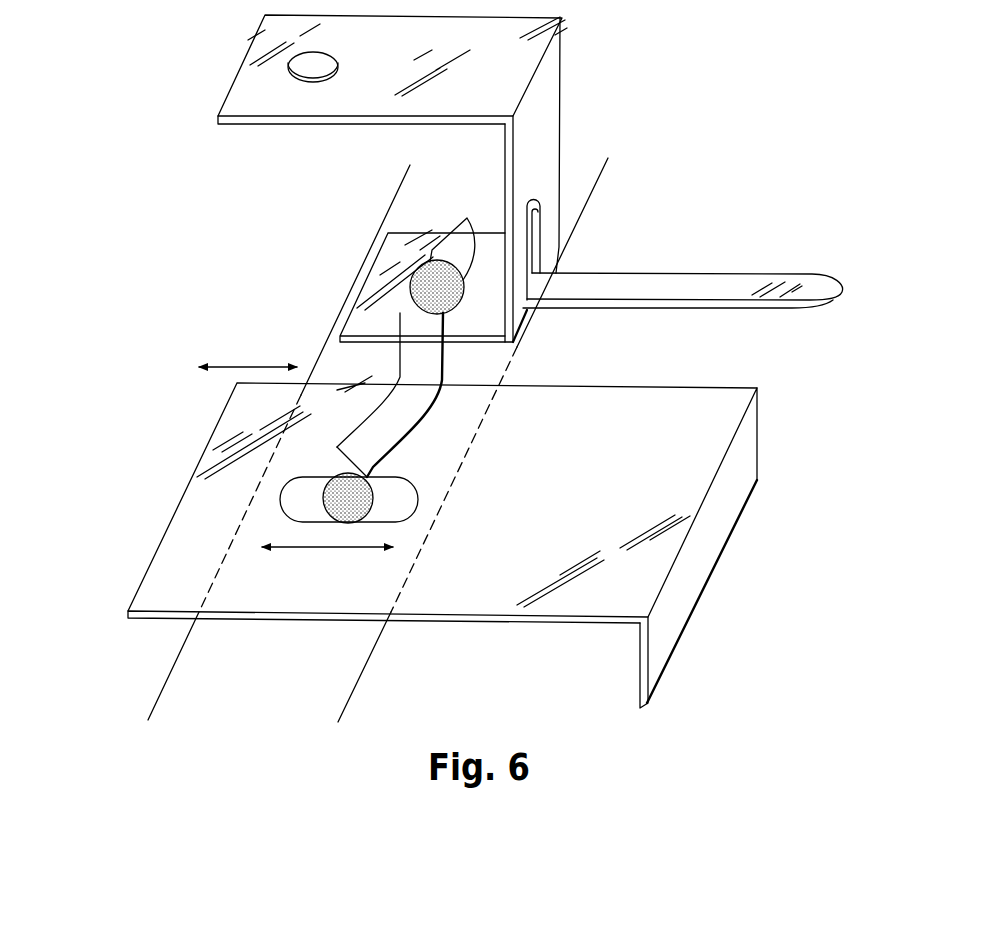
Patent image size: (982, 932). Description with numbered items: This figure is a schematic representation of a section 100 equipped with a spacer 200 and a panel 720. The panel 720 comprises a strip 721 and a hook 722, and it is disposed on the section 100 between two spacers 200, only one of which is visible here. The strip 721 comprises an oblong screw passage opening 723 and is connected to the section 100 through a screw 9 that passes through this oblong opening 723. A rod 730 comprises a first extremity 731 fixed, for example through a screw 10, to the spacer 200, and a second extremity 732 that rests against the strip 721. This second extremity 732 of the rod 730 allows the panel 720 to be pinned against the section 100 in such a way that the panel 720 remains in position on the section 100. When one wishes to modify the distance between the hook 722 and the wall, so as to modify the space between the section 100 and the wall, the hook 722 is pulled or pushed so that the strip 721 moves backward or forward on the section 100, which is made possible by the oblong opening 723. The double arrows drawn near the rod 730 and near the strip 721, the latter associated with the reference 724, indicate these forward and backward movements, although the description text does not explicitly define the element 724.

The spacer 200 is at (542, 102).
The section 100 is at (187, 683).
The screw 10 is at (423, 283).
The first extremity 731 is at (455, 240).
The rod 730 is at (420, 365).
The second extremity 732 is at (350, 443).
The screw 9 is at (362, 500).
The oblong screw passage opening 723 is at (295, 495).
The sliding direction 724 is at (325, 548).
The strip 721 is at (707, 400).
The hook 722 is at (702, 547).
The panel 720 is at (490, 640).